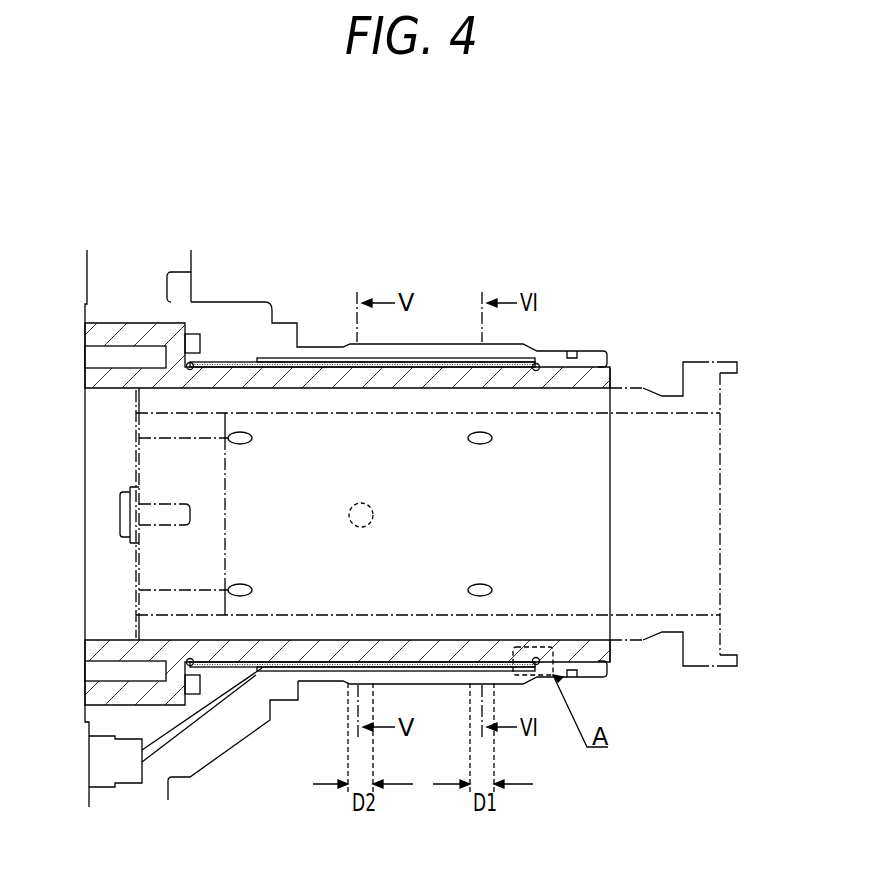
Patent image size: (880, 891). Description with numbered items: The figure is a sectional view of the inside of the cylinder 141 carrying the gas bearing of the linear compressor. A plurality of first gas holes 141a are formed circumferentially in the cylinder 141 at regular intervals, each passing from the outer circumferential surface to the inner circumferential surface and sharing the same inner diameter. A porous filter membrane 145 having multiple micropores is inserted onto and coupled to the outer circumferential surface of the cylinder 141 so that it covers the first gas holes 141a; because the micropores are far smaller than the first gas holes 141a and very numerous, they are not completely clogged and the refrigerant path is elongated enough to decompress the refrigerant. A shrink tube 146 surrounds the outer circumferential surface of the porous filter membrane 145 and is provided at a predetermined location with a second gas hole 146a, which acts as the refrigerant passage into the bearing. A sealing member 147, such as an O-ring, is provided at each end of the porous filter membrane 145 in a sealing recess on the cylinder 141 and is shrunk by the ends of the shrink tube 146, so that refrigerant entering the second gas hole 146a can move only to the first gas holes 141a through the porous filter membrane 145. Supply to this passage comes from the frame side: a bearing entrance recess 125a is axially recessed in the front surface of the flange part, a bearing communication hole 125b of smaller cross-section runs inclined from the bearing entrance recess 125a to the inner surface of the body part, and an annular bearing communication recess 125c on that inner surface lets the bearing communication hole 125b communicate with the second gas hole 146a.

The cylinder 141 is at (285, 380).
The first gas hole 141a is at (240, 434).
The porous filter membrane 145 is at (252, 672).
The shrink tube 146 is at (218, 668).
The second gas hole 146a is at (352, 510).
The sealing member 147 is at (187, 363).
The bearing entrance recess 125a is at (140, 771).
The bearing communication hole 125b is at (168, 740).
The bearing communication recess 125c is at (285, 672).